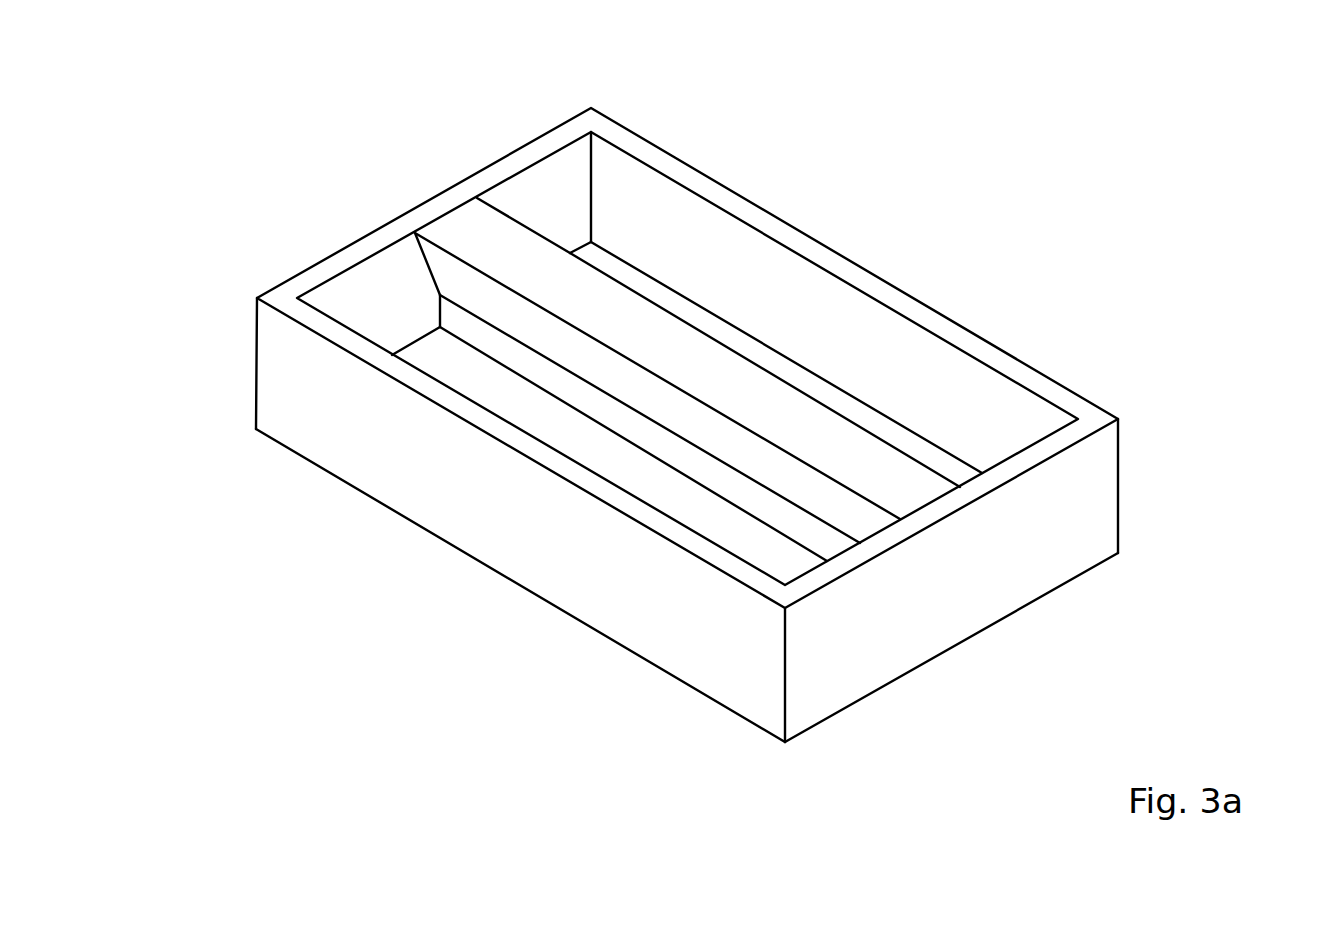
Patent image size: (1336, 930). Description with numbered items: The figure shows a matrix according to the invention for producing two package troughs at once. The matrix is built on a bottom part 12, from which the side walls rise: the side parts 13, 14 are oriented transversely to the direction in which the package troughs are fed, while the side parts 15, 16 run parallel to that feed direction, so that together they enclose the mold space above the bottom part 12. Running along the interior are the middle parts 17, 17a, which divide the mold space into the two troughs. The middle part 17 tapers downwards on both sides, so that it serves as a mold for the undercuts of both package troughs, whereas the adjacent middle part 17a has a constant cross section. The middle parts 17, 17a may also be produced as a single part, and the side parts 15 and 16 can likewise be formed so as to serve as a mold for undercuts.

The bottom part 12 is at (462, 365).
The side part 13 is at (556, 207).
The side part 14 is at (1043, 534).
The side part 15 is at (780, 310).
The side part 16 is at (615, 572).
The middle part 17 is at (877, 469).
The middle part 17a is at (603, 408).